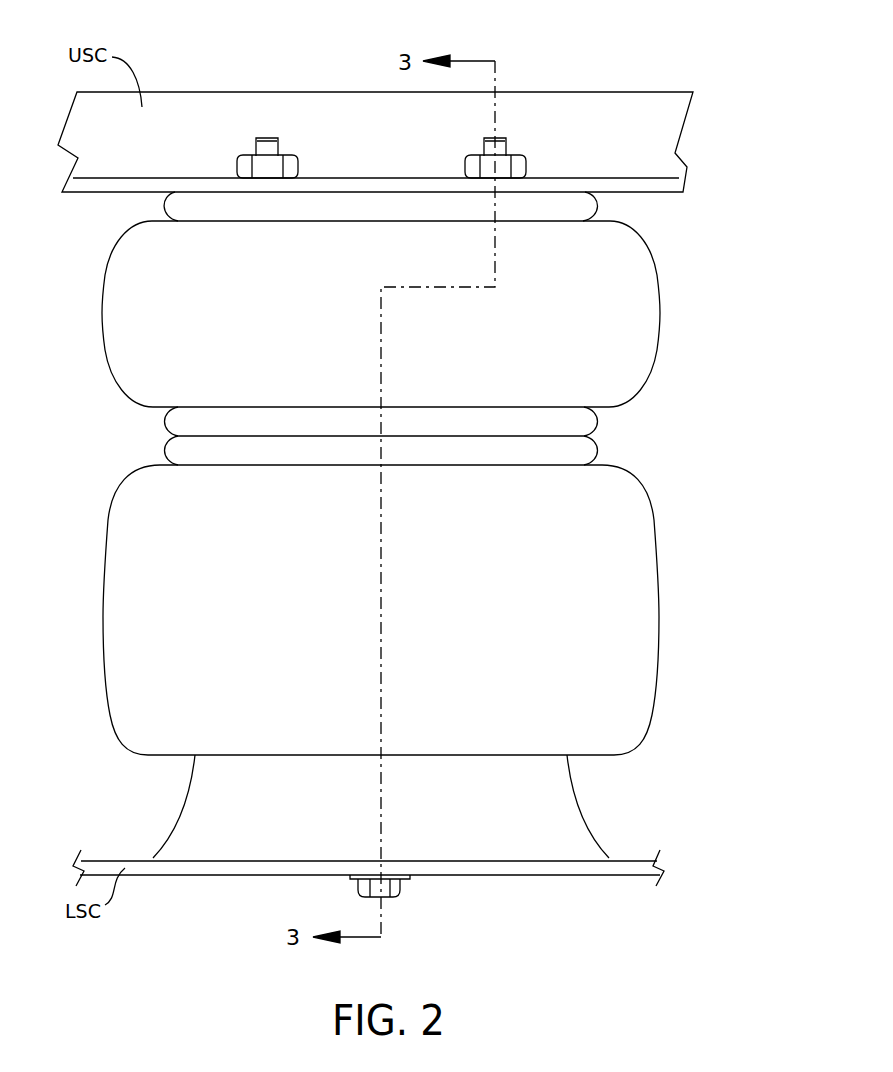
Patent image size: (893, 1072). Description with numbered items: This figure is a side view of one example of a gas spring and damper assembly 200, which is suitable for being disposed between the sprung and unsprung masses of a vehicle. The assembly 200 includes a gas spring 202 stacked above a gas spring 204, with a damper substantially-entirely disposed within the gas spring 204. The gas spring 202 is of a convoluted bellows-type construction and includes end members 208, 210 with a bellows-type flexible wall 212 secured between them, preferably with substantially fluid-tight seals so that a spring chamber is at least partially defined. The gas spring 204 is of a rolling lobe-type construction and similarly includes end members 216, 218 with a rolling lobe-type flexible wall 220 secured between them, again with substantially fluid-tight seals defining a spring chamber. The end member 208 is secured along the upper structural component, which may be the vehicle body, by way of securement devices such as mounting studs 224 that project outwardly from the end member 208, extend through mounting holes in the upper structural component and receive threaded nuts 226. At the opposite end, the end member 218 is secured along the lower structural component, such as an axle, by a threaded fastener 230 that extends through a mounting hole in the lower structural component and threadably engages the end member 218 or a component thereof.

The gas spring and damper assembly 200 is at (432, 500).
The gas spring 202 is at (420, 314).
The gas spring 204 is at (433, 610).
The end member 208 is at (565, 210).
The end member 210 is at (600, 419).
The bellows-type flexible wall 212 is at (660, 343).
The end member 216 is at (600, 449).
The end member 218 is at (600, 808).
The rolling lobe-type flexible wall 220 is at (658, 633).
The mounting studs 224 is at (279, 140).
The threaded nuts 226 is at (290, 167).
The threaded fastener 230 is at (400, 890).